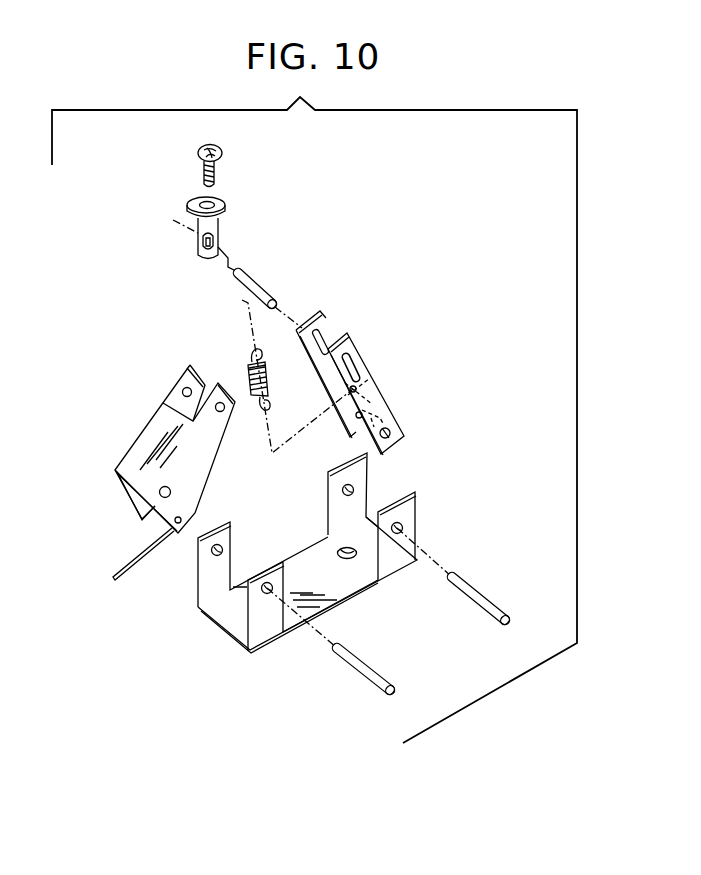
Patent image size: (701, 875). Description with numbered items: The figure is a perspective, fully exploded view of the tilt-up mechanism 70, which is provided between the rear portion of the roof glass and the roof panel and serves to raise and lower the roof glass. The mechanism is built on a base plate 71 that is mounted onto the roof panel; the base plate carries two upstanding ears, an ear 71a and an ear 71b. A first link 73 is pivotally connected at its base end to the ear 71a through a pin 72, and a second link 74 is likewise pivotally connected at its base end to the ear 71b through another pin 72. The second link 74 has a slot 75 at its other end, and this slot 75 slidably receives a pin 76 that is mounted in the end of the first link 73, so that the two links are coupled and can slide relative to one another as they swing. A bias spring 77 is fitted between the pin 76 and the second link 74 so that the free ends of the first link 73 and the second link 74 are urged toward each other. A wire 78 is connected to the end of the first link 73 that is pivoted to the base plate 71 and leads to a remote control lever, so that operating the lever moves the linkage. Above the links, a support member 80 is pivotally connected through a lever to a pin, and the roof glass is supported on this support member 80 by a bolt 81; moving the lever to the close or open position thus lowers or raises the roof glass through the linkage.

The tilt-up mechanism 70 is at (403, 398).
The base plate 71 is at (217, 625).
The ear 71a is at (253, 620).
The ear 71b is at (408, 512).
The pin 72 is at (468, 589).
The first link 73 is at (143, 442).
The second link 74 is at (330, 332).
The slot 75 is at (356, 362).
The pin 76 is at (257, 285).
The bias spring 77 is at (247, 380).
The wire 78 is at (135, 560).
The support member 80 is at (225, 217).
The bolt 81 is at (218, 163).